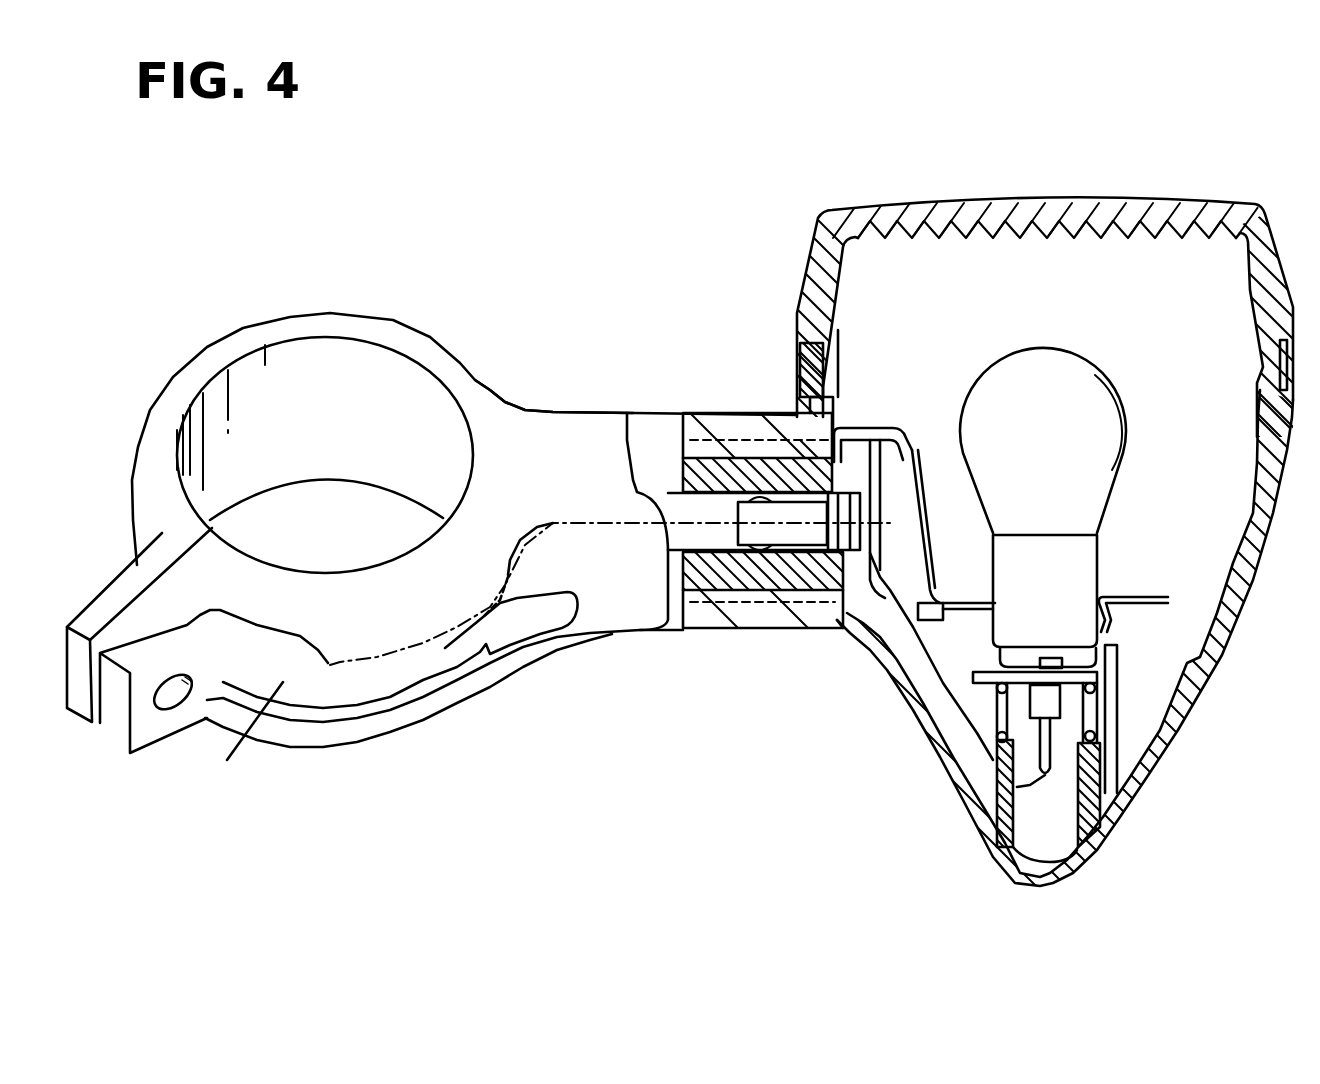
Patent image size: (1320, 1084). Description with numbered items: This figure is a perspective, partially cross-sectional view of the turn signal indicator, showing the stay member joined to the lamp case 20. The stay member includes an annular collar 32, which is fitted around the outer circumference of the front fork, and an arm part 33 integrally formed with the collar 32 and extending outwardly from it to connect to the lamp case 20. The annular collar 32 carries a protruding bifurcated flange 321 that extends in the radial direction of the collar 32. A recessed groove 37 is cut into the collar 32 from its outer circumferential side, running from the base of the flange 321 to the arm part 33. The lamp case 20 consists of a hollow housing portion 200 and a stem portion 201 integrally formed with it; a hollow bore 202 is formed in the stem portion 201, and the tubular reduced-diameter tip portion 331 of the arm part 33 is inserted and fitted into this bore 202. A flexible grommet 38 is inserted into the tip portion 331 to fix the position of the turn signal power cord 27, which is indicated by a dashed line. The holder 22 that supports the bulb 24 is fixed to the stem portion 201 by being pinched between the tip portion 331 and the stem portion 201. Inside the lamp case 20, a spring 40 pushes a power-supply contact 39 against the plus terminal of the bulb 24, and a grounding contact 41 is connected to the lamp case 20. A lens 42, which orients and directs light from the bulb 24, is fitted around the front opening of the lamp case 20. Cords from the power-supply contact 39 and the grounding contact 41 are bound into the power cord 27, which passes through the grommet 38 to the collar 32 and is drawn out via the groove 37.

The lamp case 20 is at (855, 648).
The hollow housing portion 200 is at (1178, 732).
The stem portion 201 is at (745, 640).
The hollow bore 202 is at (768, 462).
The holder 22 is at (930, 570).
The bulb 24 is at (1105, 380).
The turn signal power cord 27 is at (630, 413).
The annular collar 32 is at (430, 347).
The protruding bifurcated flange 321 is at (115, 730).
The arm part 33 is at (637, 633).
The reduced-diameter tip portion 331 is at (713, 460).
The recessed groove 37 is at (390, 680).
The flexible grommet 38 is at (912, 450).
The power-supply contact 39 is at (1103, 653).
The spring 40 is at (1120, 705).
The grounding contact 41 is at (975, 600).
The lens 42 is at (1110, 200).